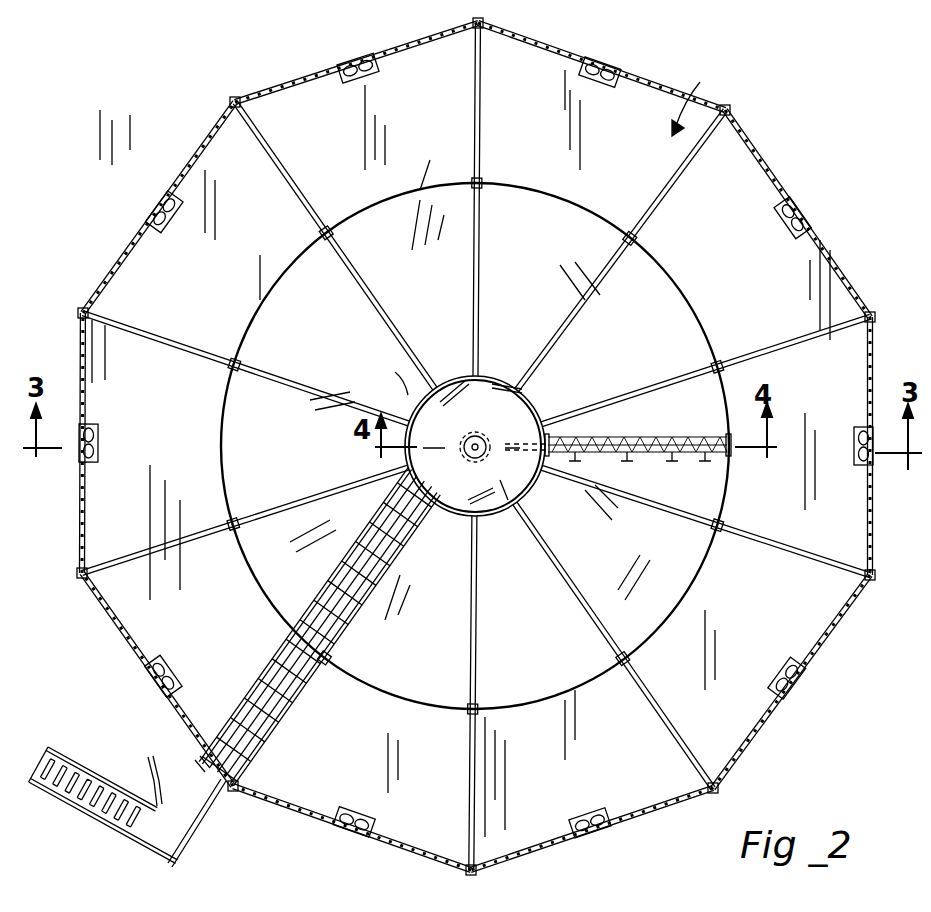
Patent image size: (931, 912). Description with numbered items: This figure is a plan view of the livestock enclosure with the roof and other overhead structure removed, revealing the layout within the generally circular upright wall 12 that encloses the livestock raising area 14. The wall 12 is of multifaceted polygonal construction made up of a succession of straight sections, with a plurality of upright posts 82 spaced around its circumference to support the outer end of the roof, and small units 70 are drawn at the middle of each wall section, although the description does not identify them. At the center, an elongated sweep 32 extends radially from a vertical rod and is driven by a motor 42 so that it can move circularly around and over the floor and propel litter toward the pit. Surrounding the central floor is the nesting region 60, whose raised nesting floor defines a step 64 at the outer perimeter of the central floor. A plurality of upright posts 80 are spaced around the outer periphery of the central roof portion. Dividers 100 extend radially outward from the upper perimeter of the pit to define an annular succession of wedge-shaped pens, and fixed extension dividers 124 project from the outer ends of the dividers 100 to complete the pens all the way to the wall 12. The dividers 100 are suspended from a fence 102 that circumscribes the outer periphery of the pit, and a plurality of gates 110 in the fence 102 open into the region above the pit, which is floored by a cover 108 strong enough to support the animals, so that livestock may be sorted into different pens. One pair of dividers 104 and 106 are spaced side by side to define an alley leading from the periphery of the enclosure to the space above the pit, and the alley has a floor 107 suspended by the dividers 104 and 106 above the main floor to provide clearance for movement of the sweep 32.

The upright wall 12 is at (778, 163).
The livestock raising area 14 is at (698, 95).
The sweep 32 is at (712, 435).
The motor 42 is at (468, 452).
The nesting region 60 is at (461, 453).
The step 64 is at (722, 300).
The vent 70 is at (350, 55).
The upright posts 80 is at (482, 180).
The upright posts 82 is at (236, 100).
The dividers 100 is at (490, 242).
The fence 102 is at (520, 392).
The divider 104 is at (330, 590).
The divider 106 is at (280, 722).
The alley floor 107 is at (275, 662).
The cover 108 is at (398, 372).
The gates 110 is at (518, 375).
The extension dividers 124 is at (474, 90).